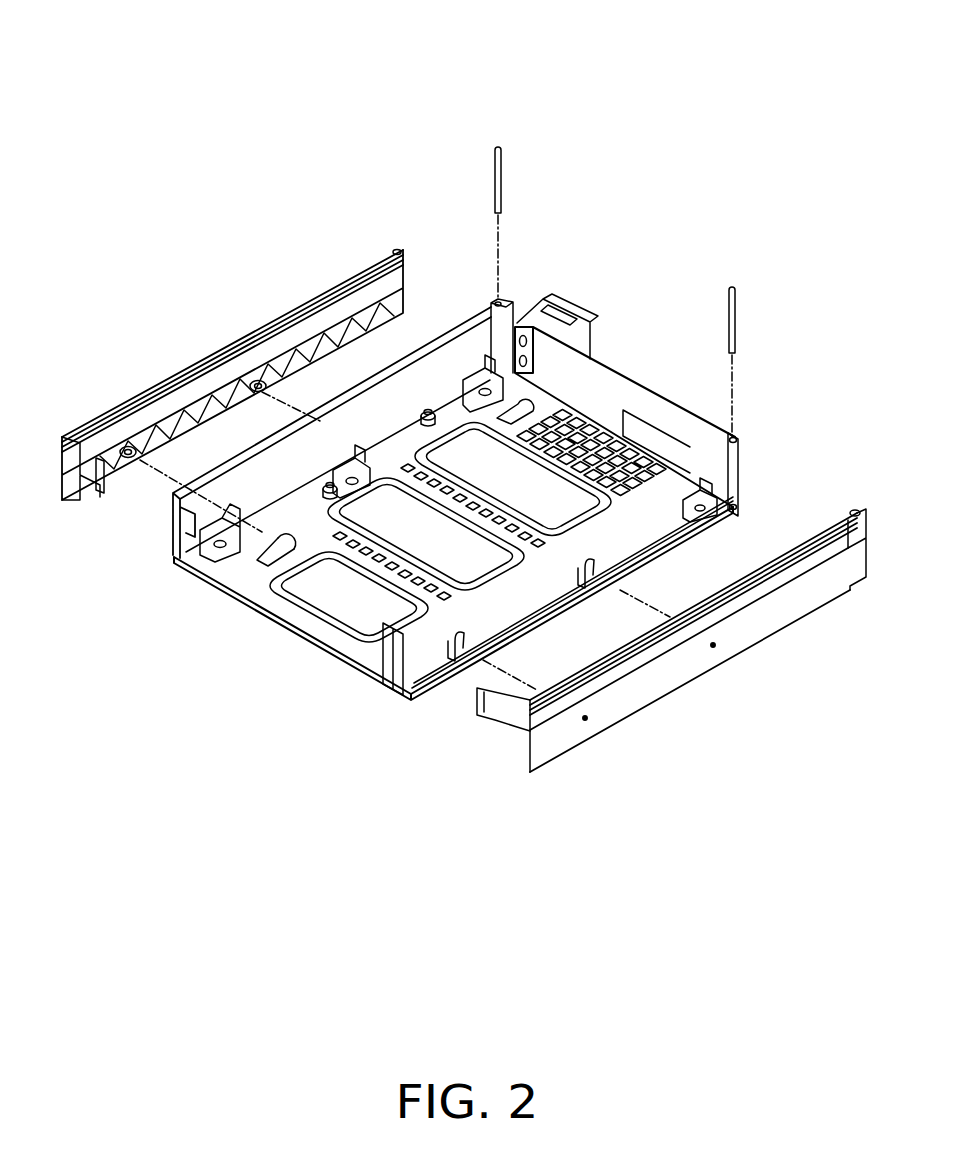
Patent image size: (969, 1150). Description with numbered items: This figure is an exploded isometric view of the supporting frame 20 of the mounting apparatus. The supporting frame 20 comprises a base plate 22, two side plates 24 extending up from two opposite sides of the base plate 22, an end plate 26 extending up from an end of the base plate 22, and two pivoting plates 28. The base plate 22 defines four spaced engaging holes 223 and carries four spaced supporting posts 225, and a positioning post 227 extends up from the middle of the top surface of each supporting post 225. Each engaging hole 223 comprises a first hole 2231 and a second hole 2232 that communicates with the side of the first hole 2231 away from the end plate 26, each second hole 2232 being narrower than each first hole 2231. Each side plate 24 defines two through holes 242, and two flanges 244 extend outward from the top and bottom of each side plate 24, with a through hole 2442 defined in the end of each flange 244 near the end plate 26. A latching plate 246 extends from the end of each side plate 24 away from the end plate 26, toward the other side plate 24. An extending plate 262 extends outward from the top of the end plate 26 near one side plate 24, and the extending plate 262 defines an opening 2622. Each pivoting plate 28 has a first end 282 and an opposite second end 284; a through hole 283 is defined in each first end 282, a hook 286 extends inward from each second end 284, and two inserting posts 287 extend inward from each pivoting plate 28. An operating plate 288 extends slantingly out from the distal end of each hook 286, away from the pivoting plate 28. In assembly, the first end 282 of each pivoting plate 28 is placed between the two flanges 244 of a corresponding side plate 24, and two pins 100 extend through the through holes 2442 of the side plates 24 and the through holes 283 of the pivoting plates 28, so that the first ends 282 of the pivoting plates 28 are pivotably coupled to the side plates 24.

The supporting frame 20 is at (484, 33).
The base plate 22 is at (323, 541).
The engaging hole 223 is at (216, 625).
The first hole 2231 is at (287, 548).
The second hole 2232 is at (263, 557).
The supporting post 225 is at (442, 405).
The positioning post 227 is at (425, 412).
The side plate 24 is at (278, 458).
The through hole 242 is at (593, 562).
The flange 244 is at (766, 459).
The through hole 2442 is at (737, 437).
The latching plate 246 is at (385, 648).
The end plate 26 is at (597, 387).
The extending plate 262 is at (580, 282).
The opening 2622 is at (567, 327).
The pivoting plate 28 is at (457, 474).
The first end 282 is at (372, 257).
The through hole 283 is at (398, 250).
The second end 284 is at (102, 442).
The hook 286 is at (88, 494).
The inserting post 287 is at (258, 381).
The operating plate 288 is at (108, 482).
The pin 100 is at (500, 175).